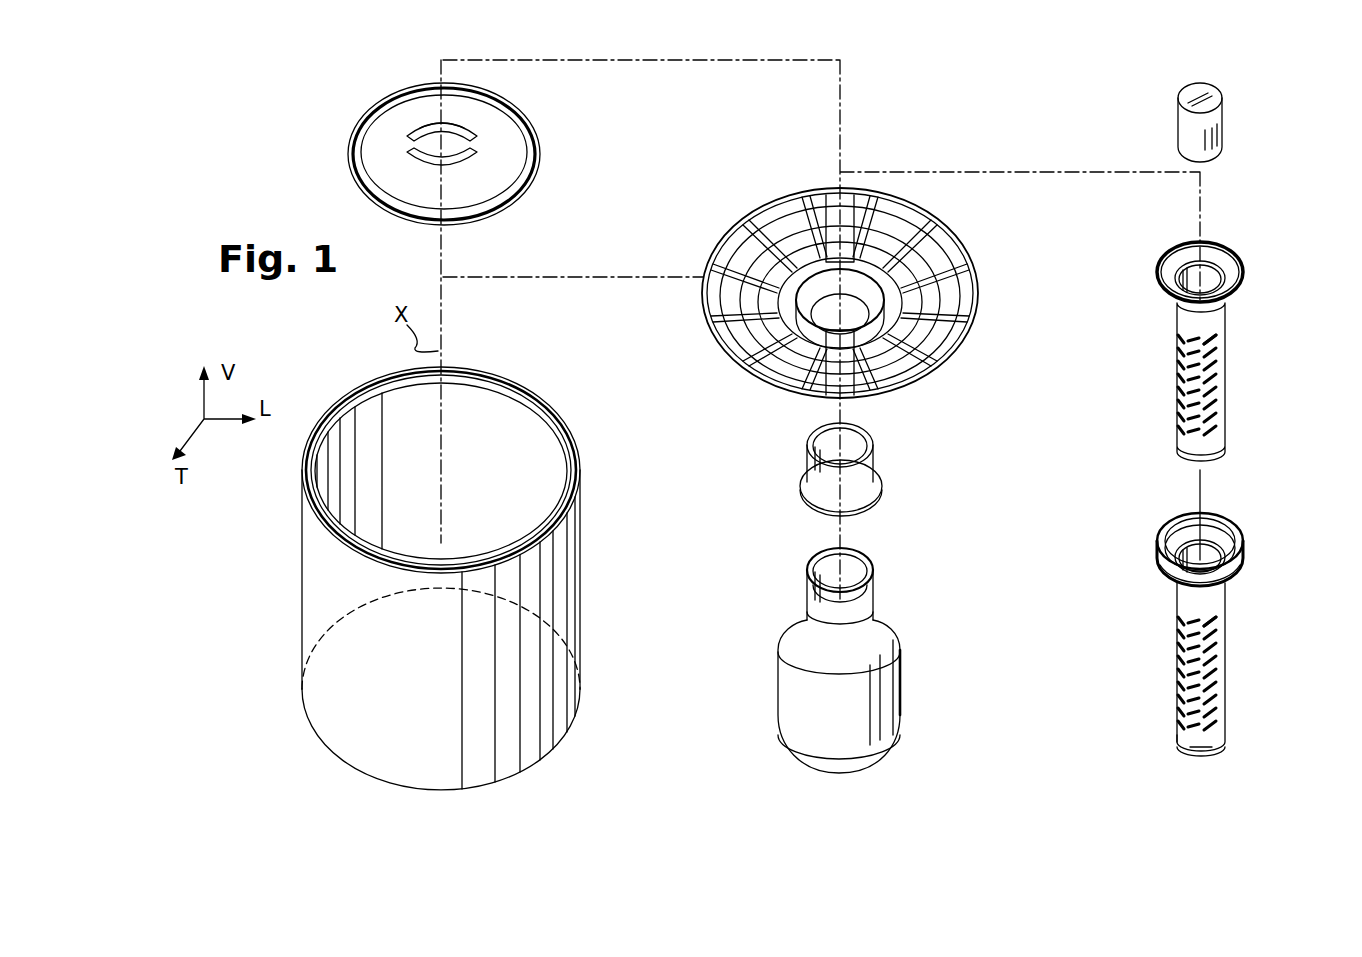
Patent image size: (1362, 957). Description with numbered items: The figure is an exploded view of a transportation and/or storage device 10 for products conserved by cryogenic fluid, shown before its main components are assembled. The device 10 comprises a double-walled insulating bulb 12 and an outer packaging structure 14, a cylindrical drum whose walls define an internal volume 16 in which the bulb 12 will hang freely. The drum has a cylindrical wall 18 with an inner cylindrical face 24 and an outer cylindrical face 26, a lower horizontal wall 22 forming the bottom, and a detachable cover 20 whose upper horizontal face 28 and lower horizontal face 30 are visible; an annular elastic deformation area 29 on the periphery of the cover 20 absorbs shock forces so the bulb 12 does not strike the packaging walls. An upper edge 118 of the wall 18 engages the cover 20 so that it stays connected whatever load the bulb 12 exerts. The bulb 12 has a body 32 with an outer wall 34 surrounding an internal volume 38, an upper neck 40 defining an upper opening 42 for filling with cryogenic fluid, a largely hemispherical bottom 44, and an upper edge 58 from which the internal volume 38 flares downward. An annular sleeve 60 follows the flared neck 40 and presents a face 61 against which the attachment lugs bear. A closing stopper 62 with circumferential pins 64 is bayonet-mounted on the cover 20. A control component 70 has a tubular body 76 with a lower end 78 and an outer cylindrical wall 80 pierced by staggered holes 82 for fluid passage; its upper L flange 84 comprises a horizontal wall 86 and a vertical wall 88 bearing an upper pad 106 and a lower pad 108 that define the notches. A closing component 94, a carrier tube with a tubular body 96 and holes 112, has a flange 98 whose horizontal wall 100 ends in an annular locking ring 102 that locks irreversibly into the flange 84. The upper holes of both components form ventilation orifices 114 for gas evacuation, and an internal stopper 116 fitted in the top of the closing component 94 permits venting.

The transportation and/or storage device 10 is at (800, 136).
The double-walled insulating bulb 12 is at (924, 728).
The outer packaging structure 14 is at (444, 562).
The internal volume 16 is at (517, 442).
The cylindrical wall 18 is at (302, 606).
The detachable cover 20 is at (866, 292).
The lower horizontal wall 22 is at (383, 722).
The inner cylindrical face 24 is at (543, 458).
The outer cylindrical face 26 is at (580, 592).
The upper horizontal face 28 is at (905, 220).
The annular elastic deformation area 29 is at (785, 200).
The lower horizontal face 30 is at (958, 368).
The body 32 is at (890, 686).
The outer wall 34 is at (902, 652).
The internal volume 38 is at (816, 699).
The upper neck 40 is at (851, 665).
The upper opening 42 is at (850, 562).
The bottom 44 is at (845, 775).
The upper edge 58 is at (815, 551).
The annular sleeve 60 is at (811, 469).
The face 61 is at (808, 510).
The closing stopper 62 is at (368, 150).
The pins 64 is at (513, 128).
The control component 70 is at (1220, 630).
The tubular body 76 is at (1180, 740).
The lower end 78 is at (1208, 746).
The outer cylindrical wall 80 is at (1215, 600).
The holes 82 is at (1216, 689).
The upper L flange 84 is at (1213, 530).
The horizontal wall 86 is at (1182, 523).
The vertical wall 88 is at (1160, 548).
The closing component 94 is at (1205, 409).
The tubular body 96 is at (1215, 318).
The flange 98 is at (1211, 246).
The horizontal wall 100 is at (1212, 250).
The annular locking ring 102 is at (1241, 259).
The upper pad 106 is at (1222, 518).
The lower pad 108 is at (1240, 580).
The holes 112 is at (1225, 430).
The ventilation orifice 114 is at (1212, 345).
The internal stopper 116 is at (1215, 125).
The upper edge 118 is at (485, 376).